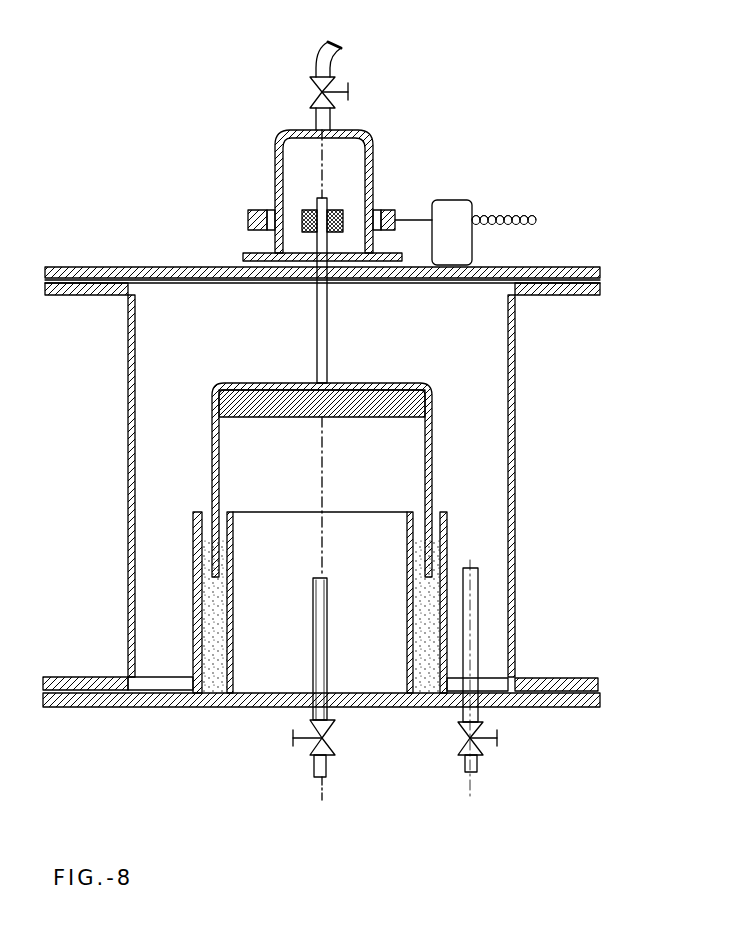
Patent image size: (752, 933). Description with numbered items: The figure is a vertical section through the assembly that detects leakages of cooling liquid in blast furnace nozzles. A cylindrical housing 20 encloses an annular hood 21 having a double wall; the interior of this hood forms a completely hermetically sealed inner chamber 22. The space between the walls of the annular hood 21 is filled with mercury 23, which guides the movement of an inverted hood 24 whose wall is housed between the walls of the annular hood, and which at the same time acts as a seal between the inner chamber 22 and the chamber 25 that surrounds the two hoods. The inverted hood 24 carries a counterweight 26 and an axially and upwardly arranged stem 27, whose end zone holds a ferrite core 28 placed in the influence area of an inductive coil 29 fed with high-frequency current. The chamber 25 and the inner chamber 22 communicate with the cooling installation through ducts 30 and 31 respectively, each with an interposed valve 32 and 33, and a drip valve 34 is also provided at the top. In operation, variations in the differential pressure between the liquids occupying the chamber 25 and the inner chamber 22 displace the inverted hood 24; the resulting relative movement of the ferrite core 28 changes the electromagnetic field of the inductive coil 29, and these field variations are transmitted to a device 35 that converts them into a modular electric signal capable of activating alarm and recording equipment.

The cylindrical housing 20 is at (515, 522).
The annular hood 21 is at (200, 657).
The inner chamber 22 is at (267, 647).
The mercury 23 is at (212, 682).
The inverted hood 24 is at (432, 470).
The counterweight 26 is at (407, 407).
The chamber 25 is at (160, 648).
The stem 27 is at (330, 330).
The ferrite core 28 is at (335, 213).
The inductive coil 29 is at (252, 213).
The duct 30 is at (472, 645).
The duct 31 is at (322, 625).
The valve 32 is at (482, 753).
The valve 33 is at (310, 753).
The drip valve 34 is at (328, 80).
The device 35 is at (458, 218).